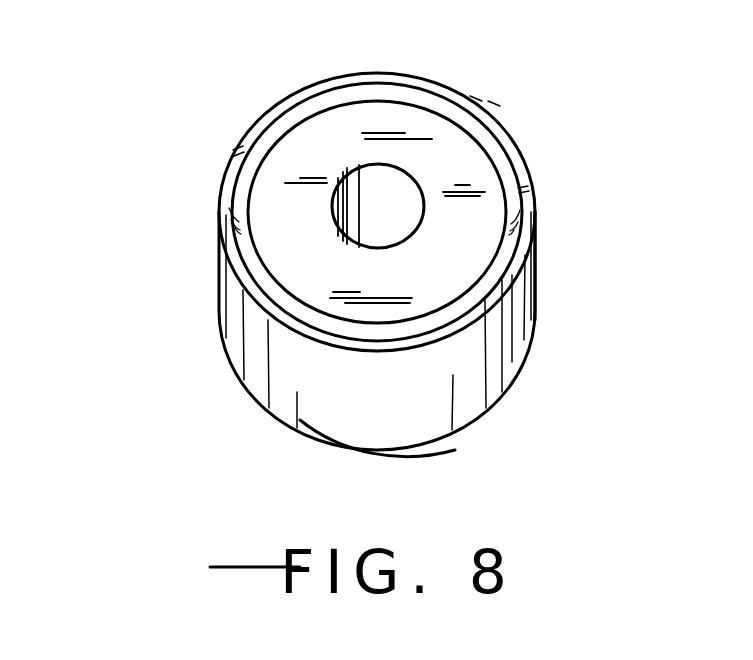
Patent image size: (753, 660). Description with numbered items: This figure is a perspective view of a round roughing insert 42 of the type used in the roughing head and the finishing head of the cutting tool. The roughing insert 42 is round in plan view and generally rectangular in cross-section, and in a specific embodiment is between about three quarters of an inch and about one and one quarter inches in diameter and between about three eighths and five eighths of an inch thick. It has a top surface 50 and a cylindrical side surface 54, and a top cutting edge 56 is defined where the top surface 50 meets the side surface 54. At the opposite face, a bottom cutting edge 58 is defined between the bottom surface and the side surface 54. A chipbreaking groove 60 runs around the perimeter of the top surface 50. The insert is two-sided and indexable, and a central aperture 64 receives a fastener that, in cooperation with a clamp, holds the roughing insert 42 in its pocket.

The roughing insert 42 is at (344, 269).
The top surface 50 is at (463, 177).
The cylindrical side surface 54 is at (340, 420).
The top cutting edge 56 is at (280, 108).
The bottom cutting edge 58 is at (446, 441).
The chipbreaking groove 60 is at (513, 193).
The central aperture 64 is at (380, 192).